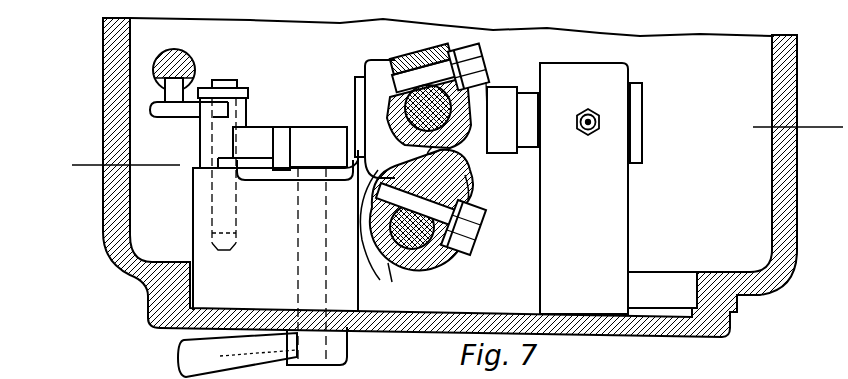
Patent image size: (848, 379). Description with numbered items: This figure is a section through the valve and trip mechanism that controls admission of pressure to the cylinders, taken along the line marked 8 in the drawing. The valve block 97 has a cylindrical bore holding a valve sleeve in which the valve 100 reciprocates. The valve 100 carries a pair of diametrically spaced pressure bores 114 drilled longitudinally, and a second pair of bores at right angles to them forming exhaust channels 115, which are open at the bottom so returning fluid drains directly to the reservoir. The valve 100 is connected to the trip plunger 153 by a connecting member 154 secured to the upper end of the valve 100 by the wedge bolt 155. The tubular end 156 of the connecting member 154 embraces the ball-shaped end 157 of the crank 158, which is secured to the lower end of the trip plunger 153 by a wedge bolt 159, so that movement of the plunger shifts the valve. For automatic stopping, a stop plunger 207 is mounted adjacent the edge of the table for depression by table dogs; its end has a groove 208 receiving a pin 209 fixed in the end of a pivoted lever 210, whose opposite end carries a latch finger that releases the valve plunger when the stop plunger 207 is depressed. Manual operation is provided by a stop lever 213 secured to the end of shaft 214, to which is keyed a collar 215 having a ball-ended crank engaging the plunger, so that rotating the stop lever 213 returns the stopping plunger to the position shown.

The section line 8- 8 is at (78, 178).
The valve block 97 is at (622, 241).
The valve 100 is at (404, 255).
The pressure bores 114 is at (478, 205).
The exhaust channels 115 is at (378, 272).
The trip plunger 153 is at (372, 113).
The connecting member 154 is at (450, 262).
The wedge bolt 155 is at (369, 210).
The tubular end 156 is at (477, 190).
The ball-shaped end 157 is at (462, 168).
The crank 158 is at (415, 50).
The wedge bolt 159 is at (396, 62).
The stop plunger 207 is at (192, 58).
The groove 208 is at (186, 84).
The pin 209 is at (160, 96).
The pivoted lever 210 is at (252, 133).
The stop lever 213 is at (182, 354).
The shaft 214 is at (325, 284).
The collar 215 is at (307, 127).